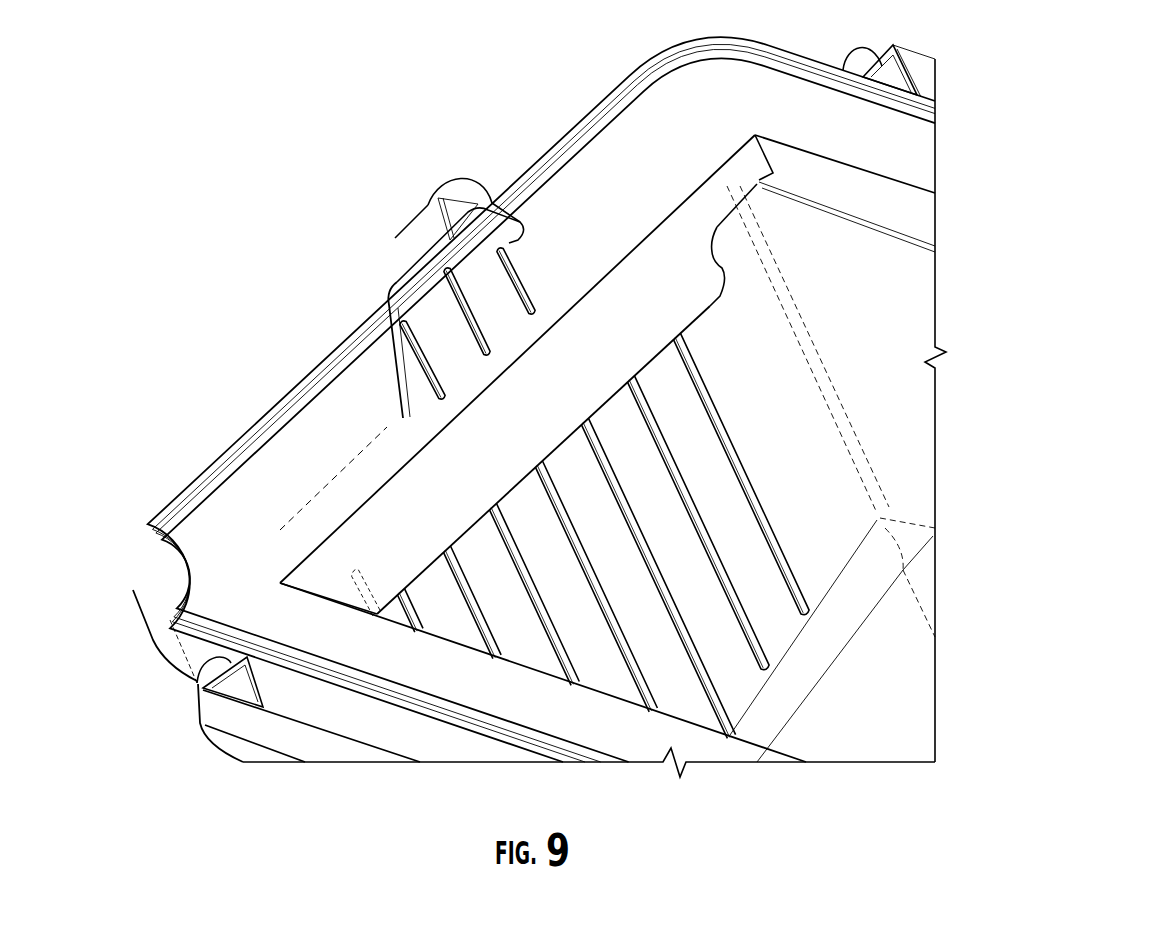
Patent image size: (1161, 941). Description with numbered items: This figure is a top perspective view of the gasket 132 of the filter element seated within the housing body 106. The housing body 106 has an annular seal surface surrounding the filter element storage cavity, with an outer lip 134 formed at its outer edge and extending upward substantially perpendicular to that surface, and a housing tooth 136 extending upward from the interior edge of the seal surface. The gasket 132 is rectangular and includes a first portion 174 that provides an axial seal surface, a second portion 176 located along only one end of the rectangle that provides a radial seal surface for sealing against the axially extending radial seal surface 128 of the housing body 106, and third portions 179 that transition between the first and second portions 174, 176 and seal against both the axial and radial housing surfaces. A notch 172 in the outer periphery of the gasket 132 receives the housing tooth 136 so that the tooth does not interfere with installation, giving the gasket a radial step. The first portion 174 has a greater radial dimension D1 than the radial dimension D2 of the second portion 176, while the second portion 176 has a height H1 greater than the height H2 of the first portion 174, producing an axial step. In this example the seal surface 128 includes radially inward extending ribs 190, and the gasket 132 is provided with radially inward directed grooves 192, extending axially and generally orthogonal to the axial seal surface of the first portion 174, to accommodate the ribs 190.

The housing body 106 is at (130, 543).
The axially extending radial seal surface 128 is at (405, 282).
The gasket 132 is at (572, 202).
The outer lip 134 is at (582, 120).
The housing tooth 136 is at (440, 228).
The notch 172 is at (367, 373).
The first portion 174 is at (207, 535).
The second portion 176 is at (540, 378).
The third portions 179 is at (373, 472).
The ribs 190 is at (443, 300).
The grooves 192 is at (533, 325).
The radial dimension of first portion D1 is at (183, 484).
The radial dimension of second portion D2 is at (308, 500).
The height of second portion H1 is at (723, 228).
The height of first portion H2 is at (664, 220).